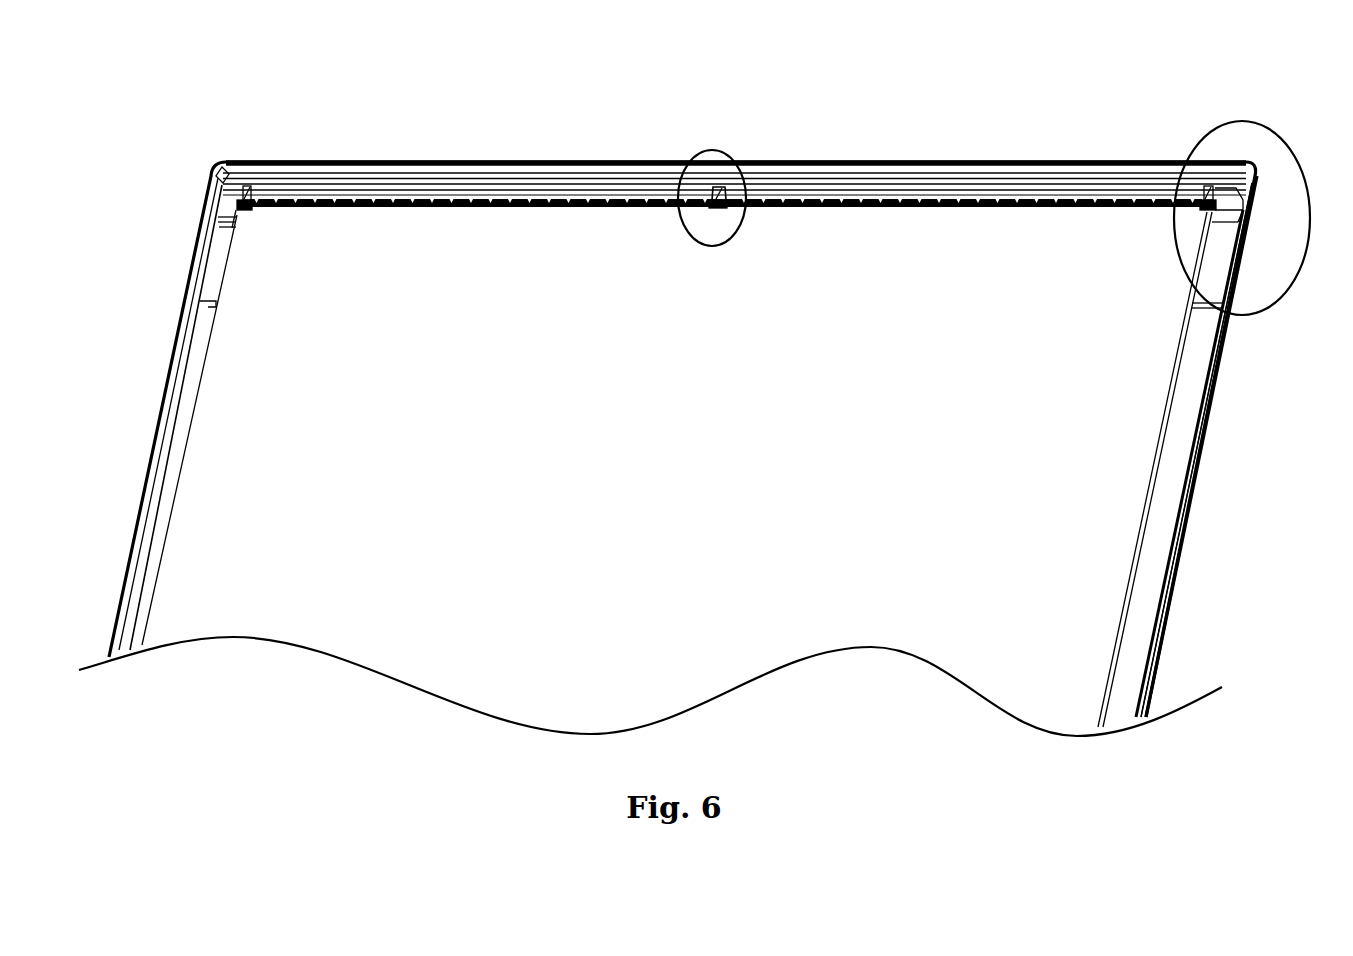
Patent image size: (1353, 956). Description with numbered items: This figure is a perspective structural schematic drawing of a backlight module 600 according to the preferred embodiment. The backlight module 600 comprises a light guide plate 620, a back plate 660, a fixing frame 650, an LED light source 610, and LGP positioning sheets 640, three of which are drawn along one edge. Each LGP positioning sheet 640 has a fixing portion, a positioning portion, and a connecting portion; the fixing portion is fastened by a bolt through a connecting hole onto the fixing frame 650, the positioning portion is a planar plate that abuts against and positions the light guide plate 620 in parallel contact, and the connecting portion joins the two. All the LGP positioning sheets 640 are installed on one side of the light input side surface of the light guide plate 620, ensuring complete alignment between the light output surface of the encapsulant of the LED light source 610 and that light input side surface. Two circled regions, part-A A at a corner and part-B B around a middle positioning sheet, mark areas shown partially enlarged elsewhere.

The backlight module 600 is at (244, 138).
The LED light source 610 is at (421, 200).
The light guide plate 620 is at (515, 230).
The LGP positioning sheet 640 is at (710, 190).
The fixing frame 650 is at (805, 187).
The back plate 660 is at (1157, 523).
The part- A is at (1290, 250).
The part- B is at (718, 172).